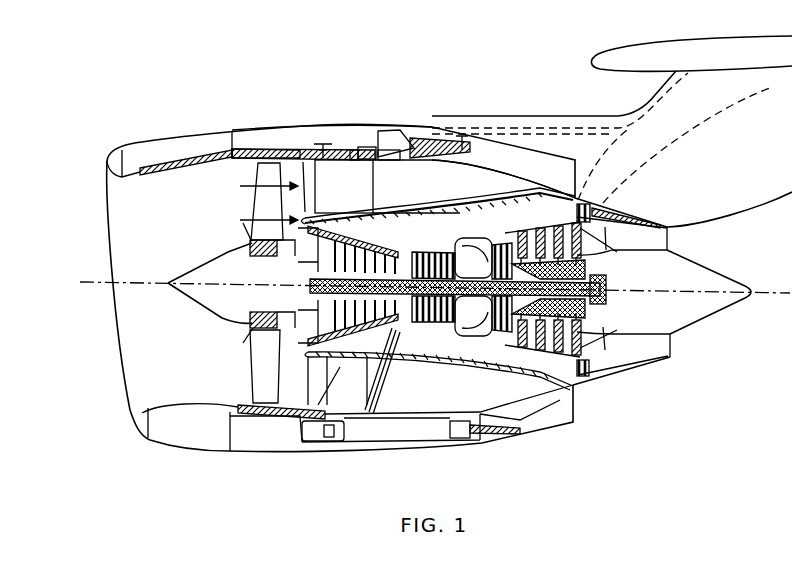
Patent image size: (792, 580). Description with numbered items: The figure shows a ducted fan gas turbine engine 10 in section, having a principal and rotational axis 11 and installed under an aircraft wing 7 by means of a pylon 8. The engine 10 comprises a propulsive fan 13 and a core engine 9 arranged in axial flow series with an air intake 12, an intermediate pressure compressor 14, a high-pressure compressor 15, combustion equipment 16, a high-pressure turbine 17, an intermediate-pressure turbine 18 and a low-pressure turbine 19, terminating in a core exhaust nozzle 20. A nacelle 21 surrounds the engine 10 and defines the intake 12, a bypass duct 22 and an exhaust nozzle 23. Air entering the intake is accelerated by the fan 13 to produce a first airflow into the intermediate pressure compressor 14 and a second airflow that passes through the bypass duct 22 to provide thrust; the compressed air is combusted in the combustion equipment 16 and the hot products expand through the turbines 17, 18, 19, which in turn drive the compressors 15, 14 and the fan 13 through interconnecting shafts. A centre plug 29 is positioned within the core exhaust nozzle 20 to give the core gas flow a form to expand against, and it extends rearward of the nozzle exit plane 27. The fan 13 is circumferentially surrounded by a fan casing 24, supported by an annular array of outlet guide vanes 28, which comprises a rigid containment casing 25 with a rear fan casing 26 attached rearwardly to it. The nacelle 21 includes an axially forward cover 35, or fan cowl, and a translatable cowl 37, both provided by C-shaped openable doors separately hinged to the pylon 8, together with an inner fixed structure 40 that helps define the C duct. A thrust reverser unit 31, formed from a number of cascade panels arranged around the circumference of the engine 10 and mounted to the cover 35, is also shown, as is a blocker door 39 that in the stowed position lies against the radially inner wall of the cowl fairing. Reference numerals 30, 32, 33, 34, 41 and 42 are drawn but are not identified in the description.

The aircraft wing 7 is at (612, 57).
The pylon 8 is at (640, 109).
The core engine 9 is at (526, 372).
The ducted fan gas turbine engine 10 is at (168, 73).
The principal and rotational axis 11 is at (127, 284).
The air intake 12 is at (128, 177).
The propulsive fan 13 is at (243, 223).
The intermediate pressure compressor 14 is at (380, 338).
The high-pressure compressor 15 is at (419, 323).
The combustion equipment 16 is at (457, 338).
The high-pressure turbine 17 is at (476, 326).
The intermediate-pressure turbine 18 is at (497, 334).
The low-pressure turbine 19 is at (530, 353).
The core exhaust nozzle 20 is at (665, 362).
The nacelle 21 is at (190, 130).
The bypass duct 22 is at (489, 190).
The exhaust nozzle 23 is at (612, 146).
The fan casing 24 is at (299, 150).
The rigid containment casing 25 is at (266, 150).
The rear fan casing 26 is at (358, 152).
The exit plane 27 is at (673, 342).
The outlet guide vanes 28 is at (323, 182).
The centre plug 29 is at (714, 274).
The fan cowl 30 is at (311, 103).
The thrust reverser unit 31 is at (433, 128).
The surface heat exchanger 32 is at (394, 158).
The core cowl 33 is at (384, 228).
The engine core 34 is at (462, 317).
The axially forward cover 35 is at (377, 132).
The translatable cowl 37 is at (473, 142).
The blocker door 39 is at (443, 413).
The inner fixed structure 40 is at (437, 211).
The valve 41 is at (324, 144).
The heat exchanger module 42 is at (366, 147).